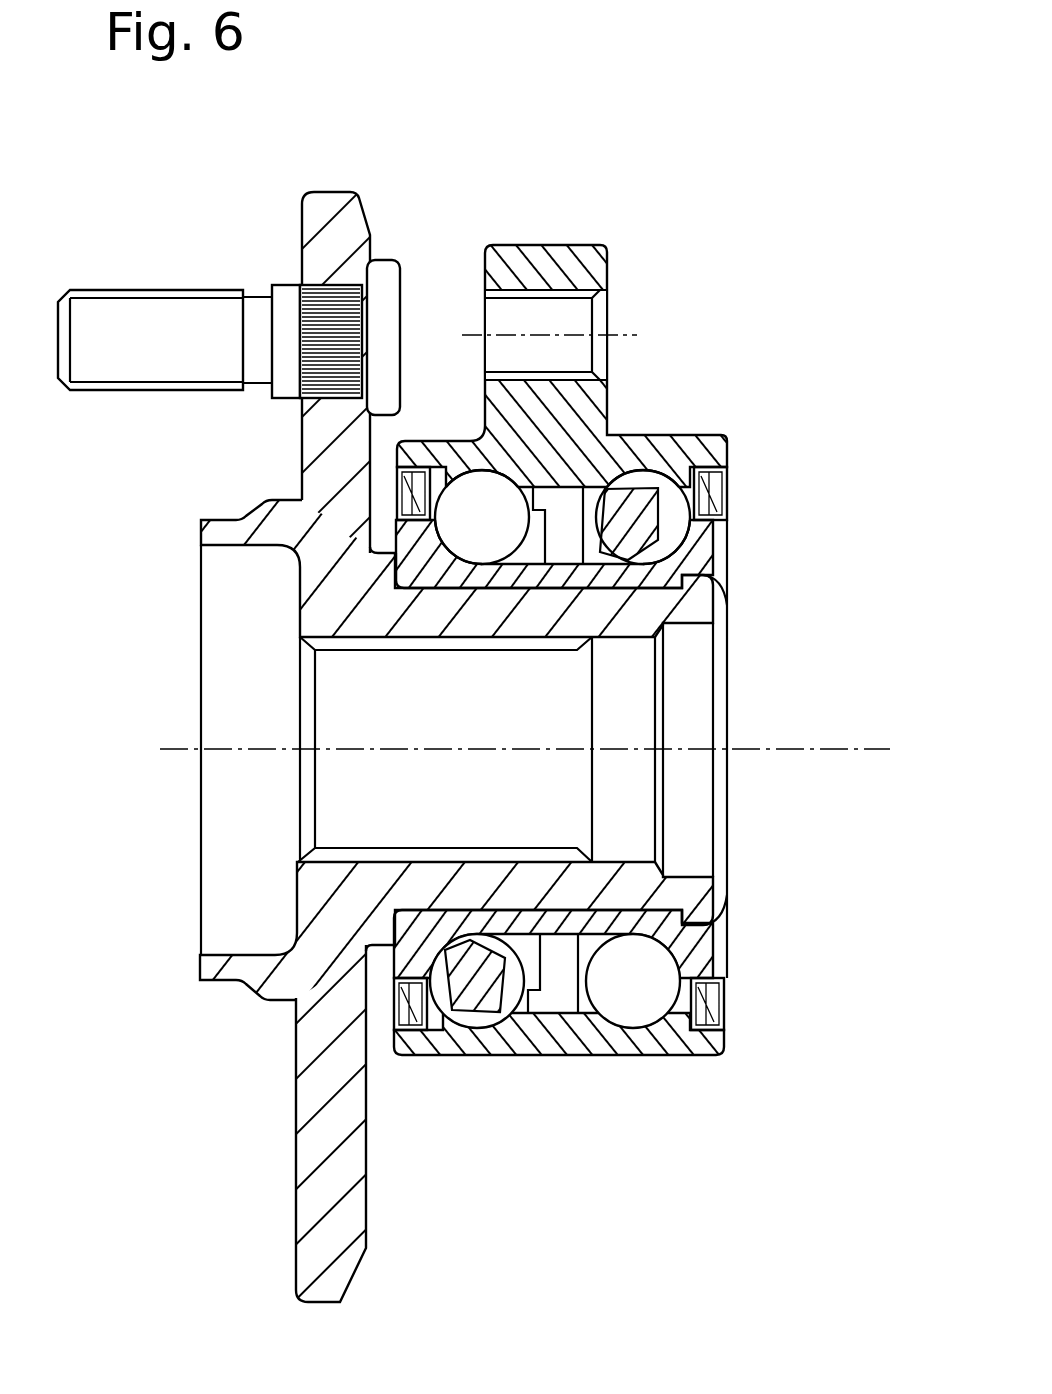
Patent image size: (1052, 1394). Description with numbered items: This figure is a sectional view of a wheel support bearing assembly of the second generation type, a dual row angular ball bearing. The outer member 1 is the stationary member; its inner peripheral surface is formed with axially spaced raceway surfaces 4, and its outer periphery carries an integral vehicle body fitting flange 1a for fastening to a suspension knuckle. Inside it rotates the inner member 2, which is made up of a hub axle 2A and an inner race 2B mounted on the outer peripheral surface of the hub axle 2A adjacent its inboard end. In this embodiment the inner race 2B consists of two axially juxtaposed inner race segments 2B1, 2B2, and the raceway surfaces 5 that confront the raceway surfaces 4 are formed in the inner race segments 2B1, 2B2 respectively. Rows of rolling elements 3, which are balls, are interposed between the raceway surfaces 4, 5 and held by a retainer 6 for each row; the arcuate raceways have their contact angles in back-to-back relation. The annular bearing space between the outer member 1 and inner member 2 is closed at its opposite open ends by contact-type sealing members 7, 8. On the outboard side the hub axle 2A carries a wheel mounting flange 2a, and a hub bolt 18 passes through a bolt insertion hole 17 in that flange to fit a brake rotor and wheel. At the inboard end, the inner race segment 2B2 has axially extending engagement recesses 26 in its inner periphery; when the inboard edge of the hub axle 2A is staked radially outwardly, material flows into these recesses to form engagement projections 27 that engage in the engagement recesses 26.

The outer member 1 is at (567, 592).
The vehicle body fitting flange 1a is at (546, 245).
The inner member 2 is at (441, 720).
The hub axle 2A is at (471, 692).
The inner race 2B is at (392, 572).
The wheel mounting flange 2a is at (320, 192).
The inner race segment 2B1 is at (370, 958).
The inner race segment 2B2 is at (672, 1022).
The rolling elements 3 is at (503, 1013).
The raceway surfaces 4 is at (497, 467).
The raceway surfaces 5 is at (492, 590).
The retainer 6 is at (478, 1010).
The sealing member 7 is at (397, 491).
The sealing member 8 is at (745, 486).
The bolt insertion hole 17 is at (285, 295).
The hub bolt 18 is at (182, 290).
The engagement recesses 26 is at (727, 602).
The engagement projections 27 is at (693, 577).